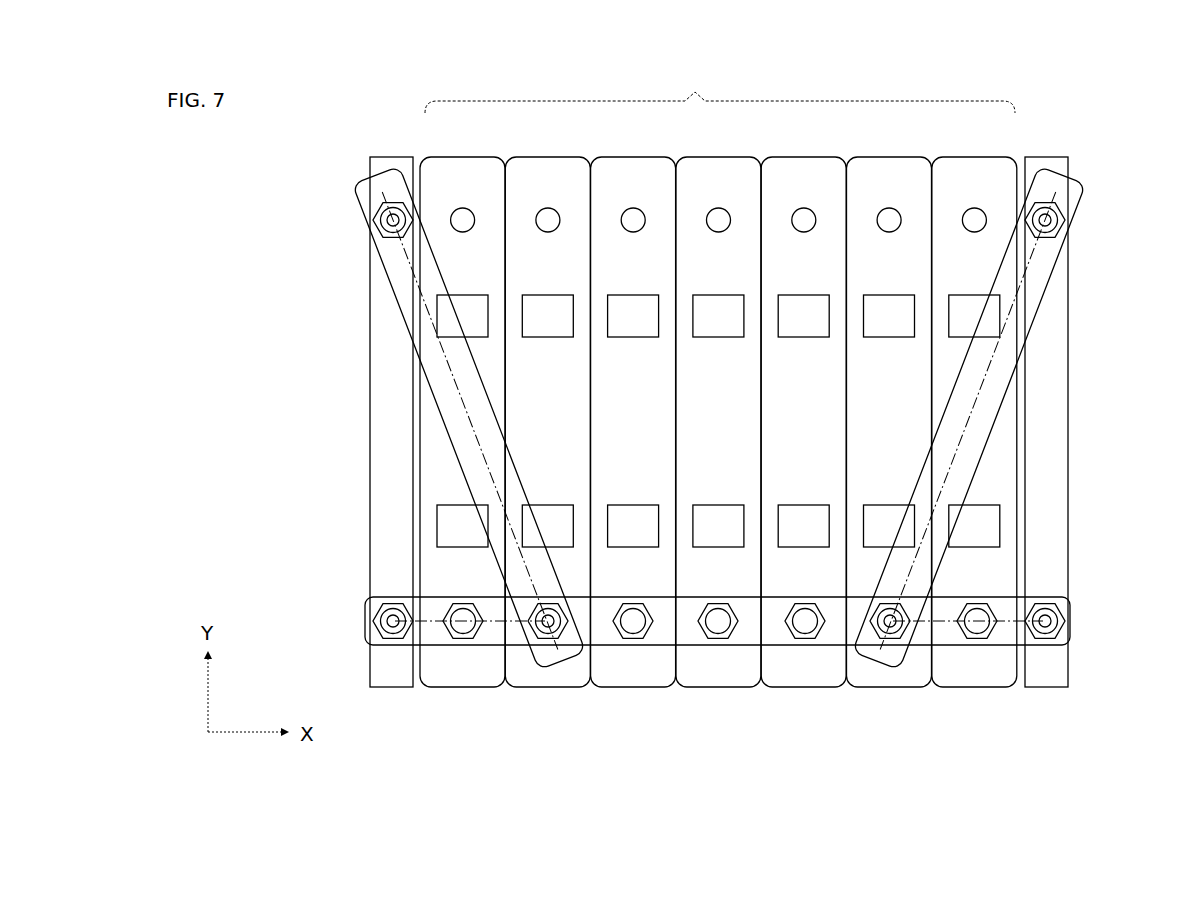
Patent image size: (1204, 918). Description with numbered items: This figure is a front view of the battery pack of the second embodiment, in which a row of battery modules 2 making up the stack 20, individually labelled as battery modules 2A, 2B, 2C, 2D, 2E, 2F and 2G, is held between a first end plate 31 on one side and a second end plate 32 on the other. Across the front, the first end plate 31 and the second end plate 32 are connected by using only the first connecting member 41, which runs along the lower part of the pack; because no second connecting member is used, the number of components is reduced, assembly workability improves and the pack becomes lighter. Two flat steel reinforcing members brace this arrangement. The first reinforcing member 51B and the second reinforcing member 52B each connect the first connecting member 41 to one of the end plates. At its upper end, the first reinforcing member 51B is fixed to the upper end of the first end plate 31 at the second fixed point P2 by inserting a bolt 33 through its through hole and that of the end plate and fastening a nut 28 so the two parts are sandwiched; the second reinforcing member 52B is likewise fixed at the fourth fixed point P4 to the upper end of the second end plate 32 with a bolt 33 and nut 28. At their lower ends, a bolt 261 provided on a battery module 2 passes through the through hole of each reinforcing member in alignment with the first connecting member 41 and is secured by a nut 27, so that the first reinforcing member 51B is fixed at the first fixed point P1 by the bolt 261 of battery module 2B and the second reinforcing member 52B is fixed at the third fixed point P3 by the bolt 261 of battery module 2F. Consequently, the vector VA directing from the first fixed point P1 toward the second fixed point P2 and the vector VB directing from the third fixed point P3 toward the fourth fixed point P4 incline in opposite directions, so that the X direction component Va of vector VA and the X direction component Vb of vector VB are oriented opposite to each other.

The battery cell stack 20 is at (720, 91).
The first end plate 31 is at (408, 170).
The second end plate 32 is at (1047, 170).
The battery cell 2A is at (463, 175).
The battery module 2B is at (566, 172).
The battery cell 2C is at (640, 172).
The battery cell 2D is at (713, 172).
The battery cell 2E is at (783, 172).
The battery module 2F is at (880, 172).
The battery cell 2G is at (958, 172).
The battery module 2 is at (718, 399).
The nut 27 is at (735, 650).
The first connecting member 41 is at (838, 628).
The first reinforcing member 51B is at (445, 382).
The second reinforcing member 52B is at (1015, 325).
The vector VA is at (460, 420).
The vector VB is at (985, 400).
The X direction component Va is at (498, 624).
The X direction component Vb is at (935, 624).
The first fixed point P1 is at (548, 640).
The second fixed point P2 is at (385, 212).
The third fixed point P3 is at (890, 640).
The fourth fixed point P4 is at (1068, 228).
The nut 28 is at (378, 212).
The bolt 33 is at (373, 230).
The bolt 261 is at (980, 225).